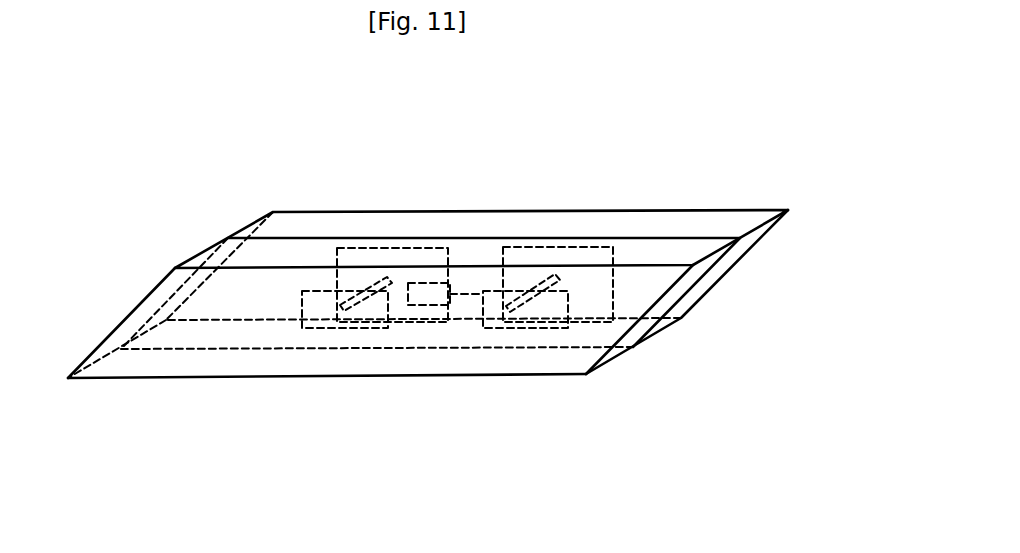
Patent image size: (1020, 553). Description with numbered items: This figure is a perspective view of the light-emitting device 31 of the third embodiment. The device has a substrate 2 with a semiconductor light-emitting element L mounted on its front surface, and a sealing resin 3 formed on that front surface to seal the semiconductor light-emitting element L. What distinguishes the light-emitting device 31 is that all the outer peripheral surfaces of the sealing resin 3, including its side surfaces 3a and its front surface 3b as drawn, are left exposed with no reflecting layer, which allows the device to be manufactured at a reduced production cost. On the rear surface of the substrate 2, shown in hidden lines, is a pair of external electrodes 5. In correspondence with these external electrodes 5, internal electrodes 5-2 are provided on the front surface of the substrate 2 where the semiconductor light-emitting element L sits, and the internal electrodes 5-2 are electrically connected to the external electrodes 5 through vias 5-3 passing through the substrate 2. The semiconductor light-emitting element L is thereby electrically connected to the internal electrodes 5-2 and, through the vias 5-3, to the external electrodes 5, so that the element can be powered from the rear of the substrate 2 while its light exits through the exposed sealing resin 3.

The light-emitting device 31 is at (692, 156).
The substrate 2 is at (703, 223).
The sealing resin 3 is at (406, 359).
The side edge of flexible board 3a is at (148, 294).
The front edge of flexible board 3b is at (268, 362).
The external electrodes 5 is at (381, 266).
The internal electrodes 5-2 is at (372, 328).
The vias 5-3 is at (386, 282).
The semiconductor light-emitting element L is at (432, 277).